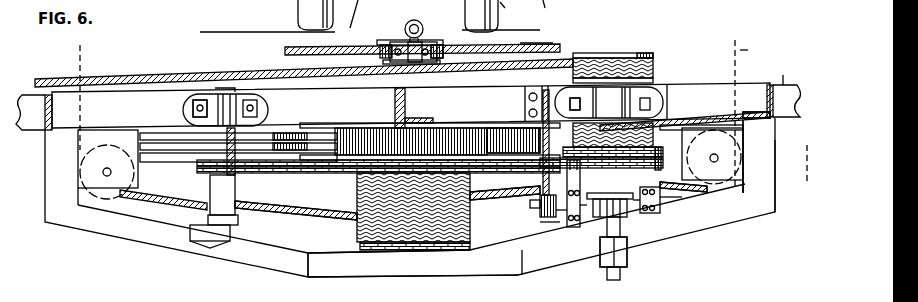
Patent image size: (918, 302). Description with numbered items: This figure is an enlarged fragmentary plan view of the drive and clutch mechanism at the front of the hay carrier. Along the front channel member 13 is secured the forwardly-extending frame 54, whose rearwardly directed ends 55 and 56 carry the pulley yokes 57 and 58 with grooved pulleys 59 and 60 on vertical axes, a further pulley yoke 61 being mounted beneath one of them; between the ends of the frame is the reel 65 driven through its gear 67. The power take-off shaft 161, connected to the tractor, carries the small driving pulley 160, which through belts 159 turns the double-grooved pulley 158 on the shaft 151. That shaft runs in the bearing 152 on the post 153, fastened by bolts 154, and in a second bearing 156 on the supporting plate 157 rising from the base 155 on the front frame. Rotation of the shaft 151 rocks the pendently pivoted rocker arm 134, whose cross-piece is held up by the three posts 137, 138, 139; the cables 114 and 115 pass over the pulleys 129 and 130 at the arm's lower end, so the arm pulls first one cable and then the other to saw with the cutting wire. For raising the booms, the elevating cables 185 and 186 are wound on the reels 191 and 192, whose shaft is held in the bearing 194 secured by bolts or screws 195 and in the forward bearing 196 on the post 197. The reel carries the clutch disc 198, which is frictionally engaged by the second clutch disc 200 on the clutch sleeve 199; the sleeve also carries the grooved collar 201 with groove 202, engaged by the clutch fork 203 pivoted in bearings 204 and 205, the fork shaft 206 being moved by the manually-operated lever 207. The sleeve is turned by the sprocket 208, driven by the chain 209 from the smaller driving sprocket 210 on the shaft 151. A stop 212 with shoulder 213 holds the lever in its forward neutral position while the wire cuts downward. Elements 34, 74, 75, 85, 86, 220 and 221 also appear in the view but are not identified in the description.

The front channel member 13 is at (665, 42).
The post 34 is at (423, 20).
The forwardly-extending frame 54 is at (478, 276).
The end of forwardly-extending frame 55 is at (775, 202).
The end of forwardly-extending frame 56 is at (45, 222).
The pulley yoke 57 is at (743, 173).
The pulley yoke 58 is at (78, 188).
The grooved pulley 59 is at (718, 190).
The grooved pulley 60 is at (98, 195).
The pulley yoke 61 is at (513, 8).
The reel 65 is at (470, 250).
The gear 67 is at (361, 137).
The gear 74 is at (483, 207).
The shaft 75 is at (314, 213).
The section line / wheel 85 is at (620, 120).
The section line / shaft 86 is at (88, 57).
The cable 114 is at (551, 37).
The cable 115 is at (286, 52).
The pulley 129 is at (430, 42).
The pulley 130 is at (391, 36).
The rocker arm 134 is at (421, 23).
The post 137 is at (750, 111).
The post 138 is at (405, 103).
The post 139 is at (52, 108).
The shaft 151 is at (222, 88).
The bearing 152 is at (268, 98).
The post 153 is at (200, 97).
The bolts 154 is at (183, 111).
The base 155 is at (250, 262).
The bearing 156 is at (243, 223).
The supporting plate 157 is at (202, 238).
The double-grooved pulley 158 is at (141, 161).
The belts 159 is at (165, 208).
The driving pulley 160 is at (378, 14).
The power take-off shaft 161 is at (341, 15).
The cable 185 is at (748, 130).
The cable 186 is at (134, 80).
The reel 191 is at (667, 123).
The reel 192 is at (648, 55).
The bearing 194 is at (657, 85).
The bolts or screws 195 is at (571, 100).
The forward bearing 196 is at (626, 256).
The post 197 is at (600, 265).
The clutch disc 198 is at (663, 147).
The clutch sleeve 199 is at (580, 165).
The second clutch disc 200 is at (707, 151).
The grooved collar 201 is at (630, 215).
The groove 202 is at (603, 220).
The clutch fork 203 is at (587, 220).
The bearing 204 is at (560, 225).
The bearing 205 is at (660, 212).
The shaft of clutch fork 206 is at (540, 203).
The manually-operated lever 207 is at (550, 218).
The sprocket 208 is at (681, 177).
The chain 209 is at (293, 173).
The driving sprocket 210 is at (236, 184).
The stop 212 is at (528, 100).
The shoulder or recess 213 is at (538, 190).
The gear 220 is at (498, 125).
The shaft 221 is at (553, 226).